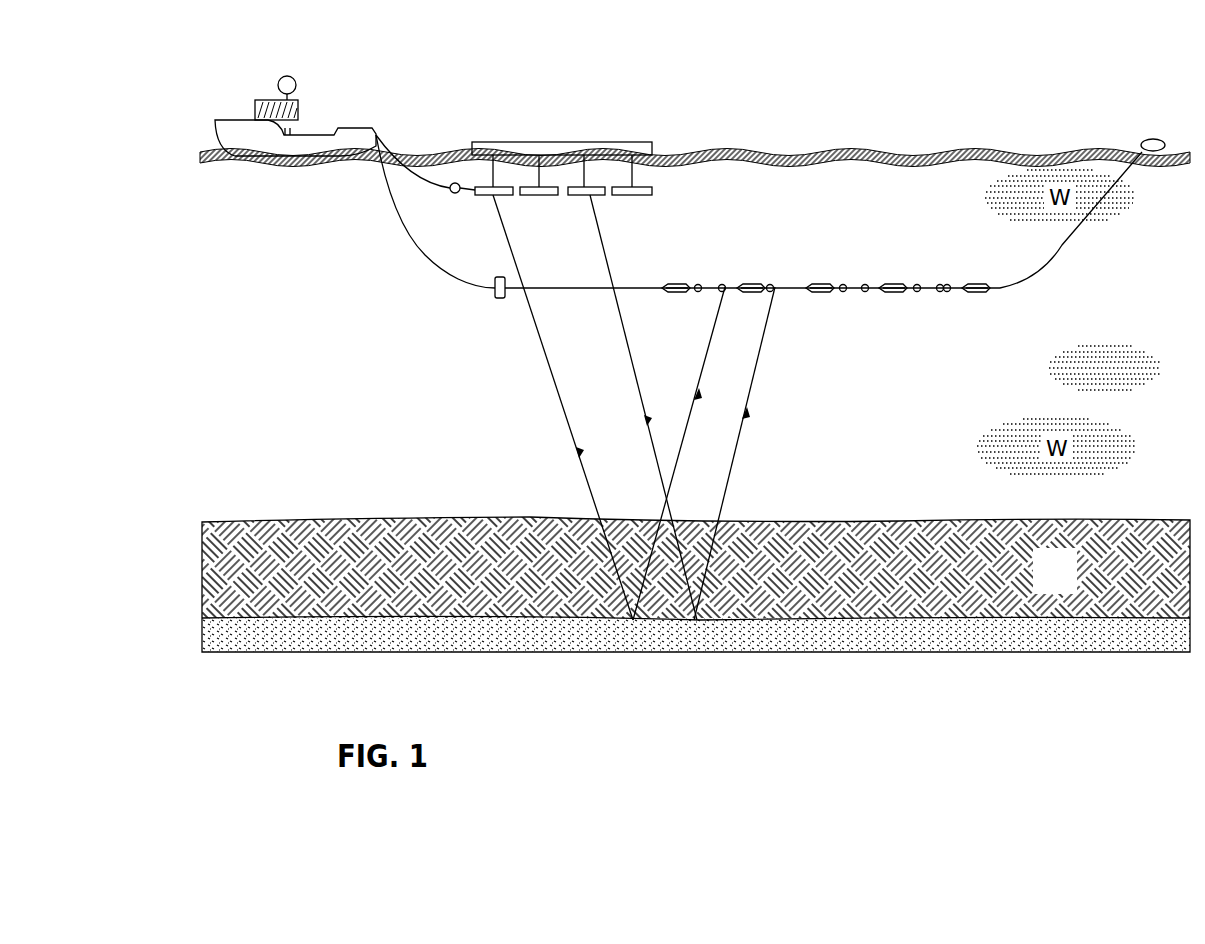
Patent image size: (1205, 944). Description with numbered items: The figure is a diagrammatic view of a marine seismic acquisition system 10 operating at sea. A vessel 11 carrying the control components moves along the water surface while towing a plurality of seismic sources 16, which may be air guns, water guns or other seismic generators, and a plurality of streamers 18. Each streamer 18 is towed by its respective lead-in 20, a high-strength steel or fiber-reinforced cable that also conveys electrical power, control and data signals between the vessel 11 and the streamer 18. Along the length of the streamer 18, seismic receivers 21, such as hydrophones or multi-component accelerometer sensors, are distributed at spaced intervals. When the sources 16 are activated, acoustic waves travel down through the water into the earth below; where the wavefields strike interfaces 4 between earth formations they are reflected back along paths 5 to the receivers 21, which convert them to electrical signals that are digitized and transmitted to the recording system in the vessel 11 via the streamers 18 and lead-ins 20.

The marine seismic acquisition system 10 is at (710, 96).
The vessel 11 is at (232, 118).
The seismic sources 16 is at (590, 196).
The lead-ins 20 is at (420, 243).
The streamers 18 is at (710, 283).
The seismic receivers 21 is at (698, 282).
The paths 5 is at (733, 448).
The interfaces 4 is at (952, 610).